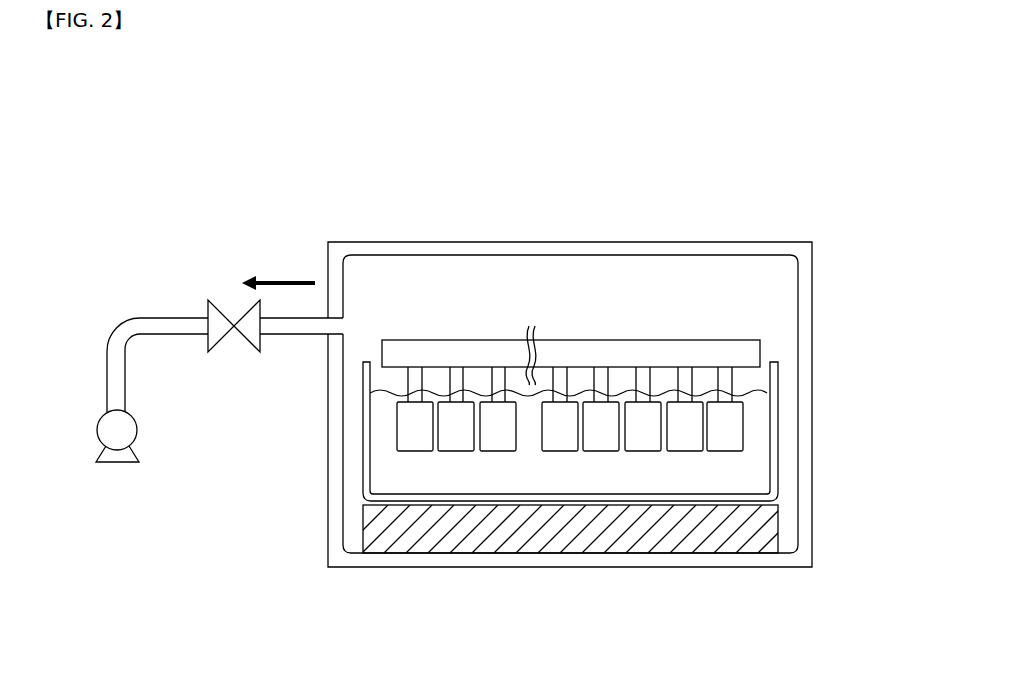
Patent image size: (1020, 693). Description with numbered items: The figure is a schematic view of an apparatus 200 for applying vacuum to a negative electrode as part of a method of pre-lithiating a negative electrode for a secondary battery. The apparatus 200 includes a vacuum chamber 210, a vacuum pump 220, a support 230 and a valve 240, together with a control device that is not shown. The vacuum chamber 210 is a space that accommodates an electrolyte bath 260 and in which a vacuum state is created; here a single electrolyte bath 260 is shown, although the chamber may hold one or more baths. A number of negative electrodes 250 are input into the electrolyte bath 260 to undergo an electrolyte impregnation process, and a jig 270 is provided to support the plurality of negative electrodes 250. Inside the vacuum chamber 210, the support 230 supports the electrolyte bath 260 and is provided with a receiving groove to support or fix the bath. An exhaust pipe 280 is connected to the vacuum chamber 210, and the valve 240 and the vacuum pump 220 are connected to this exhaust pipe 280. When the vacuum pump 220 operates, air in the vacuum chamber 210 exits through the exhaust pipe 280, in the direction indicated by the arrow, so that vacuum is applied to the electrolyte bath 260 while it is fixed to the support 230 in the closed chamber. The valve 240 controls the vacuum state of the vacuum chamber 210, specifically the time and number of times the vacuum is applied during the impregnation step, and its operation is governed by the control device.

The apparatus for applying the vacuum 200 is at (62, 163).
The vacuum chamber 210 is at (807, 300).
The vacuum pump 220 is at (117, 455).
The support 230 is at (730, 542).
The valve 240 is at (234, 330).
The negative electrode 250 is at (732, 445).
The electrolyte bath 260 is at (773, 425).
The jig 270 is at (673, 350).
The exhaust pipe 280 is at (143, 325).